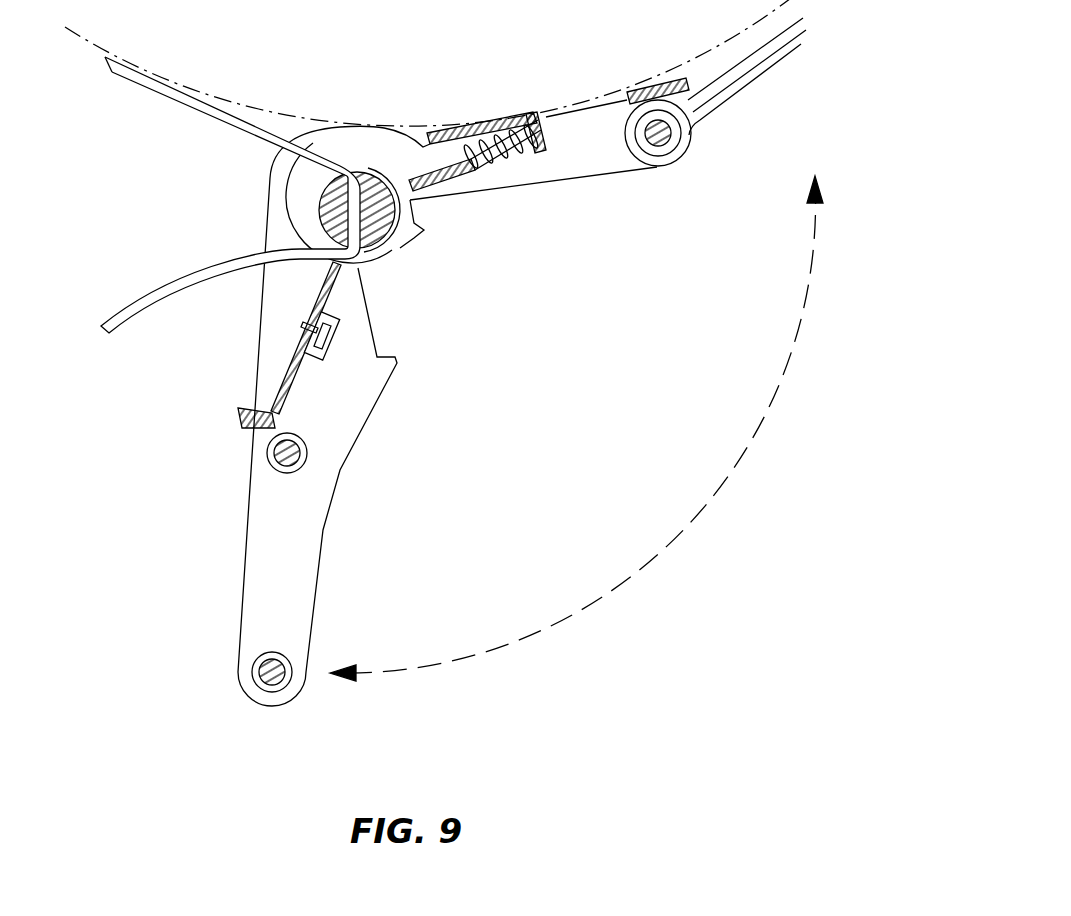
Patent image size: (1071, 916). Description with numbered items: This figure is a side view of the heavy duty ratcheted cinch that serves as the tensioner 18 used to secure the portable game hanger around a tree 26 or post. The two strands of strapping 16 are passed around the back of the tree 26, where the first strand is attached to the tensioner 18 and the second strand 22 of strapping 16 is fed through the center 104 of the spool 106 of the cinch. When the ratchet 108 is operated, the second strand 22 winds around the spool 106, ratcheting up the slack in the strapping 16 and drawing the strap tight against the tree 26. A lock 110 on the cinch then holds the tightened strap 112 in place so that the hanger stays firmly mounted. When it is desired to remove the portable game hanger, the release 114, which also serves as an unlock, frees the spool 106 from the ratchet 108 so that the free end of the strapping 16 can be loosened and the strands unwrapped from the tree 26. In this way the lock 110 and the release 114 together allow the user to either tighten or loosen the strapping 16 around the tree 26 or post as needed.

The strapping 16 is at (168, 98).
The tensioner 18 is at (430, 106).
The second strand 22 is at (258, 138).
The tree 26 is at (213, 98).
The center 104 is at (403, 231).
The spool 106 is at (415, 207).
The ratchet 108 is at (392, 266).
The lock 110 is at (463, 170).
The tightened strap 112 is at (167, 292).
The release 114 is at (333, 340).